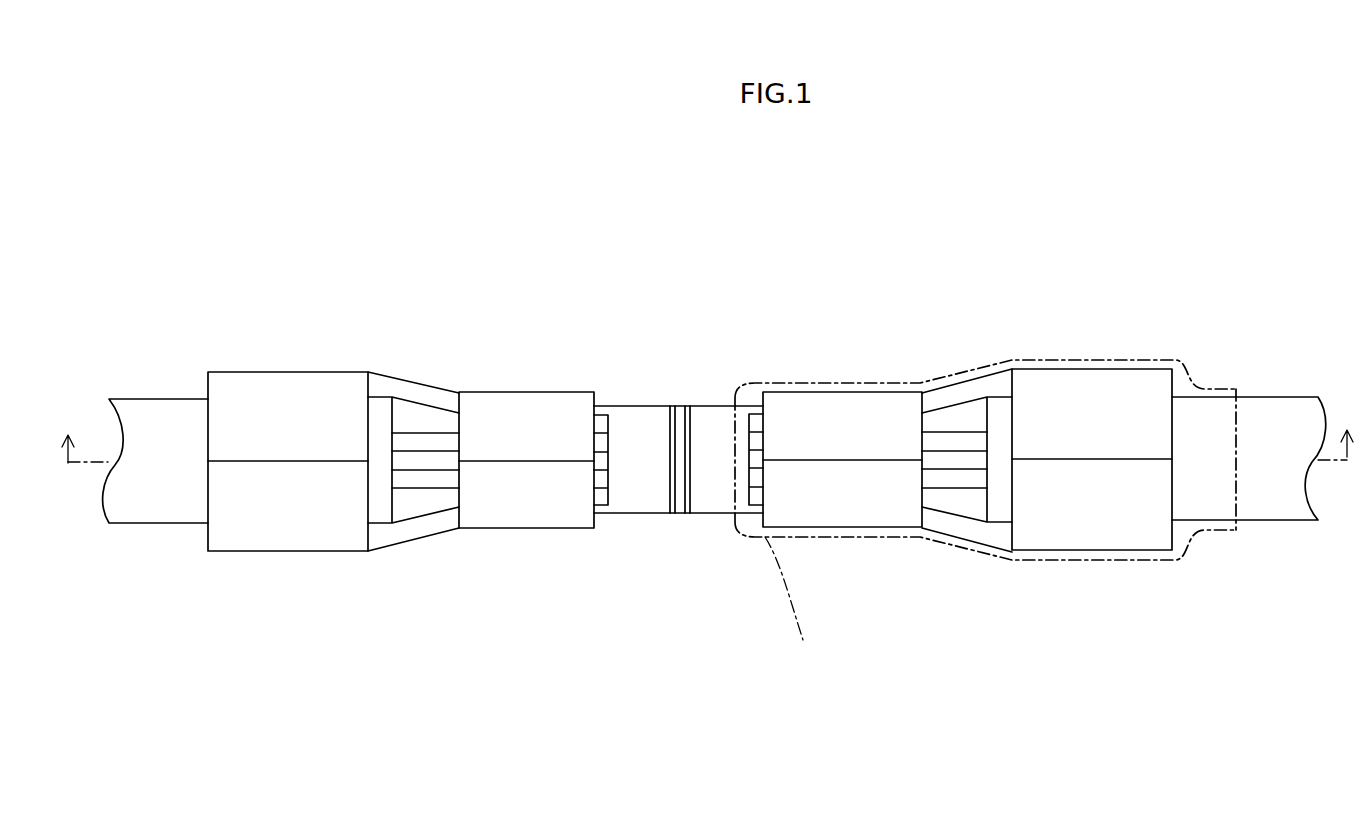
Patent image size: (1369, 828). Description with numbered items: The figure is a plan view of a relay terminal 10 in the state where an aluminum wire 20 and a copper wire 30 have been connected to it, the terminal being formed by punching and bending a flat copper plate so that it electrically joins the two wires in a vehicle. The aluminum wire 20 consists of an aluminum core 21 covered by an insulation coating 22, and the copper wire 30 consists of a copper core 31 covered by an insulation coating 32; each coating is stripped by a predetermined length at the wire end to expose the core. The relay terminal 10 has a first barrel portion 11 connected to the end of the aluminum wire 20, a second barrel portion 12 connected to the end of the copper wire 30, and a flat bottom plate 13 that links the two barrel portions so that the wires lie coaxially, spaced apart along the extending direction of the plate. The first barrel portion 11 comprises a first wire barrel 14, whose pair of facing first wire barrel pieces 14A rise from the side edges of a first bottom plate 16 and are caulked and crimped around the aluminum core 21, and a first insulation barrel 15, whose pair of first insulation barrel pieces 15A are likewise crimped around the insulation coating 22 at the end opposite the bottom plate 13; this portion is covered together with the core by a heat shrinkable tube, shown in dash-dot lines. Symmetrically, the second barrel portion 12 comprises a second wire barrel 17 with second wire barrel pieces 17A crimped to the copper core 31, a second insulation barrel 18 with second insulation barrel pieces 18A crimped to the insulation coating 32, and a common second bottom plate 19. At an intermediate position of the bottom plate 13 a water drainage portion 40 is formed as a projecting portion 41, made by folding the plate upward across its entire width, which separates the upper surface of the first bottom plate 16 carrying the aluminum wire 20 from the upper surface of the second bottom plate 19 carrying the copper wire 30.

The relay terminal 10 is at (673, 380).
The first barrel portion 11 is at (958, 381).
The second barrel portion 12 is at (412, 380).
The bottom plate 13 is at (653, 495).
The first wire barrel 14 is at (845, 529).
The first wire barrel pieces 14A is at (838, 415).
The first insulation barrel 15 is at (1102, 364).
The first insulation barrel pieces 15A is at (1130, 380).
The first bottom plate 16 is at (978, 512).
The second wire barrel 17 is at (515, 530).
The second wire barrel pieces 17A is at (527, 415).
The second insulation barrel 18 is at (283, 553).
The second insulation barrel pieces 18A is at (278, 390).
The second bottom plate 19 is at (400, 513).
The aluminum wire 20 is at (1265, 522).
The aluminum core 21 is at (972, 425).
The insulation coating 22 is at (1286, 412).
The copper wire 30 is at (152, 524).
The copper core 31 is at (432, 445).
The insulation coating 32 is at (173, 417).
The water drainage portion 40 is at (717, 515).
The projecting portion 41 is at (681, 503).